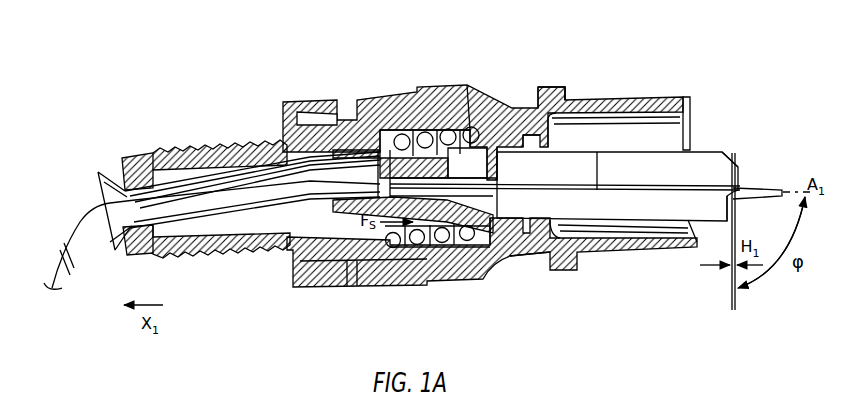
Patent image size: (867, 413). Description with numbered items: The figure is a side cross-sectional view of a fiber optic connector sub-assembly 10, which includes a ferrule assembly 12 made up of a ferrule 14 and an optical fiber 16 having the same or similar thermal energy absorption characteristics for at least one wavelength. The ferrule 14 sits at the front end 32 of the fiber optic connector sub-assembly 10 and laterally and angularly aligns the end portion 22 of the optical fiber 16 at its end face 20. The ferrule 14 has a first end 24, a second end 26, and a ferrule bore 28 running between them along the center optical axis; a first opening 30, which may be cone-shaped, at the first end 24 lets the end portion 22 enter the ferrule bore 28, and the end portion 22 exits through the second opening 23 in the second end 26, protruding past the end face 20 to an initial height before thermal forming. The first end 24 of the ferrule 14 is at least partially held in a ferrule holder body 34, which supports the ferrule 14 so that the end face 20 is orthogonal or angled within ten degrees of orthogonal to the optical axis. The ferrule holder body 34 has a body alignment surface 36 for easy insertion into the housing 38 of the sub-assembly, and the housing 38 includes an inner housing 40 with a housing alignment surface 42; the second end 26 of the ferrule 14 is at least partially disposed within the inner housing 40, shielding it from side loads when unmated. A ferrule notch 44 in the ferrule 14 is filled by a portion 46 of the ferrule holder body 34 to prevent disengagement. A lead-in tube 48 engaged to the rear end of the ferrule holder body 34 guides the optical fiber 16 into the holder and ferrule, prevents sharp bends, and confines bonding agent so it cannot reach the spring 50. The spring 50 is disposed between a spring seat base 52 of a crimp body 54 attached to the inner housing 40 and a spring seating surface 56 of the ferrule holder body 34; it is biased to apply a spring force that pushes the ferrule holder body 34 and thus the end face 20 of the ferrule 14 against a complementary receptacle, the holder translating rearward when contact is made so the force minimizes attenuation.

The fiber optic connector sub-assembly 10 is at (268, 86).
The ferrule assembly 12 is at (640, 254).
The ferrule 14 is at (698, 162).
The optical fiber 16 is at (597, 152).
The end face 20 is at (738, 173).
The end portion 22 is at (735, 190).
The second opening 23 is at (725, 199).
The first end 24 is at (446, 150).
The second end 26 is at (735, 157).
The ferrule bore 28 is at (573, 193).
The first opening 30 is at (432, 130).
The front end 32 is at (688, 58).
The ferrule holder body 34 is at (487, 228).
The body alignment surface 36 is at (488, 232).
The housing 38 is at (549, 80).
The inner housing 40 is at (557, 86).
The housing alignment surface 42 is at (514, 136).
The ferrule notch 44 is at (497, 176).
The portion 46 is at (483, 155).
The lead-in tube 48 is at (228, 200).
The spring 50 is at (330, 137).
The spring seat base 52 is at (420, 245).
The crimp body 54 is at (272, 247).
The spring seating surface 56 is at (468, 242).